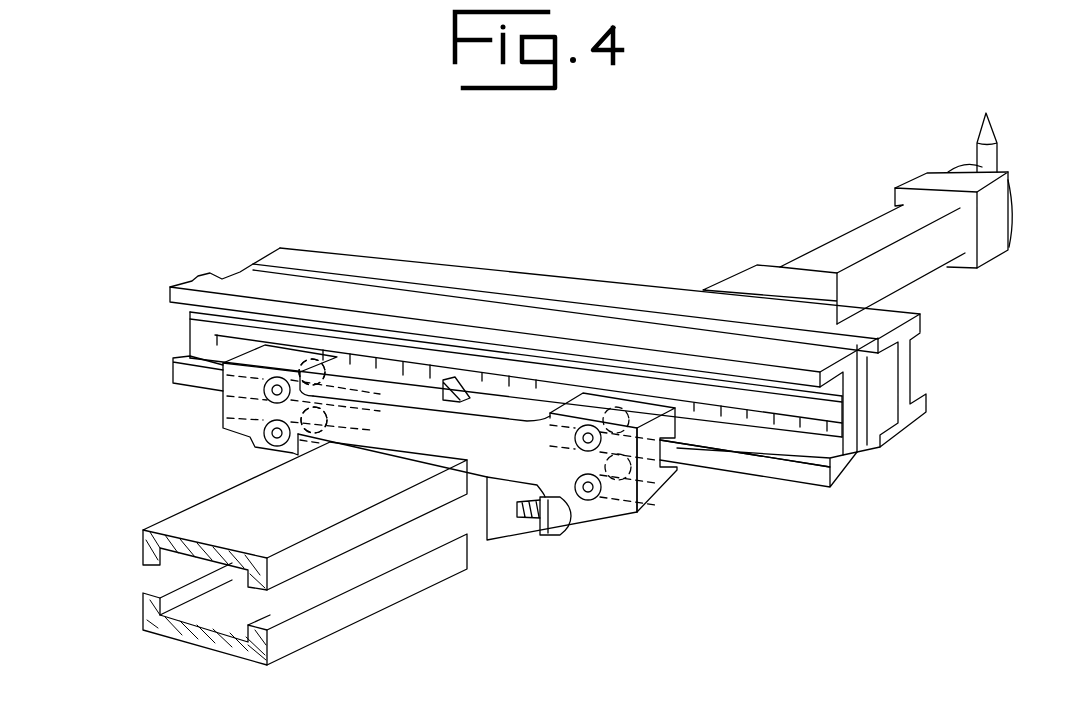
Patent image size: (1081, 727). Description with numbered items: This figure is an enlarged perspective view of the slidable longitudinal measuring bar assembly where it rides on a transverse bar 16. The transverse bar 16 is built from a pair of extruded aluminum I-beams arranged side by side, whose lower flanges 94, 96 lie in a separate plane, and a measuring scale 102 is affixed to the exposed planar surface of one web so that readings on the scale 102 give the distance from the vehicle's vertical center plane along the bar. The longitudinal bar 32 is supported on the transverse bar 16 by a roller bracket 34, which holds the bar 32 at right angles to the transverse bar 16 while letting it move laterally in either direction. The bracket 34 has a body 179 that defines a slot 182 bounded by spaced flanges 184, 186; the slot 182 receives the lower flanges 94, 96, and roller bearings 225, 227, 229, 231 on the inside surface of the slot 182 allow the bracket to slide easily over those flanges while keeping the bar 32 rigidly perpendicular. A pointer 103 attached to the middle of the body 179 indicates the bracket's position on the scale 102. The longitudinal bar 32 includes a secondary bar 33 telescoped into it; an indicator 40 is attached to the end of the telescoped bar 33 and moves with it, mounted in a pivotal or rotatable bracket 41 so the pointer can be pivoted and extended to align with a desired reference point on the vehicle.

The transverse bar 16 is at (393, 262).
The longitudinal bar 32 is at (208, 502).
The secondary bar 33 is at (826, 247).
The roller bracket 34 is at (217, 413).
The indicator 40 is at (995, 143).
The pivotal bracket 41 is at (1017, 207).
The lower flange 94 is at (817, 482).
The lower flange 96 is at (918, 412).
The measuring scale 102 is at (830, 408).
The pointer 103 is at (455, 377).
The body 179 is at (428, 438).
The slot 182 is at (677, 462).
The flange 184 is at (637, 426).
The flange 186 is at (693, 470).
The roller bearing 225 is at (623, 410).
The roller bearing 227 is at (620, 480).
The roller bearing 229 is at (307, 364).
The roller bearing 231 is at (332, 436).